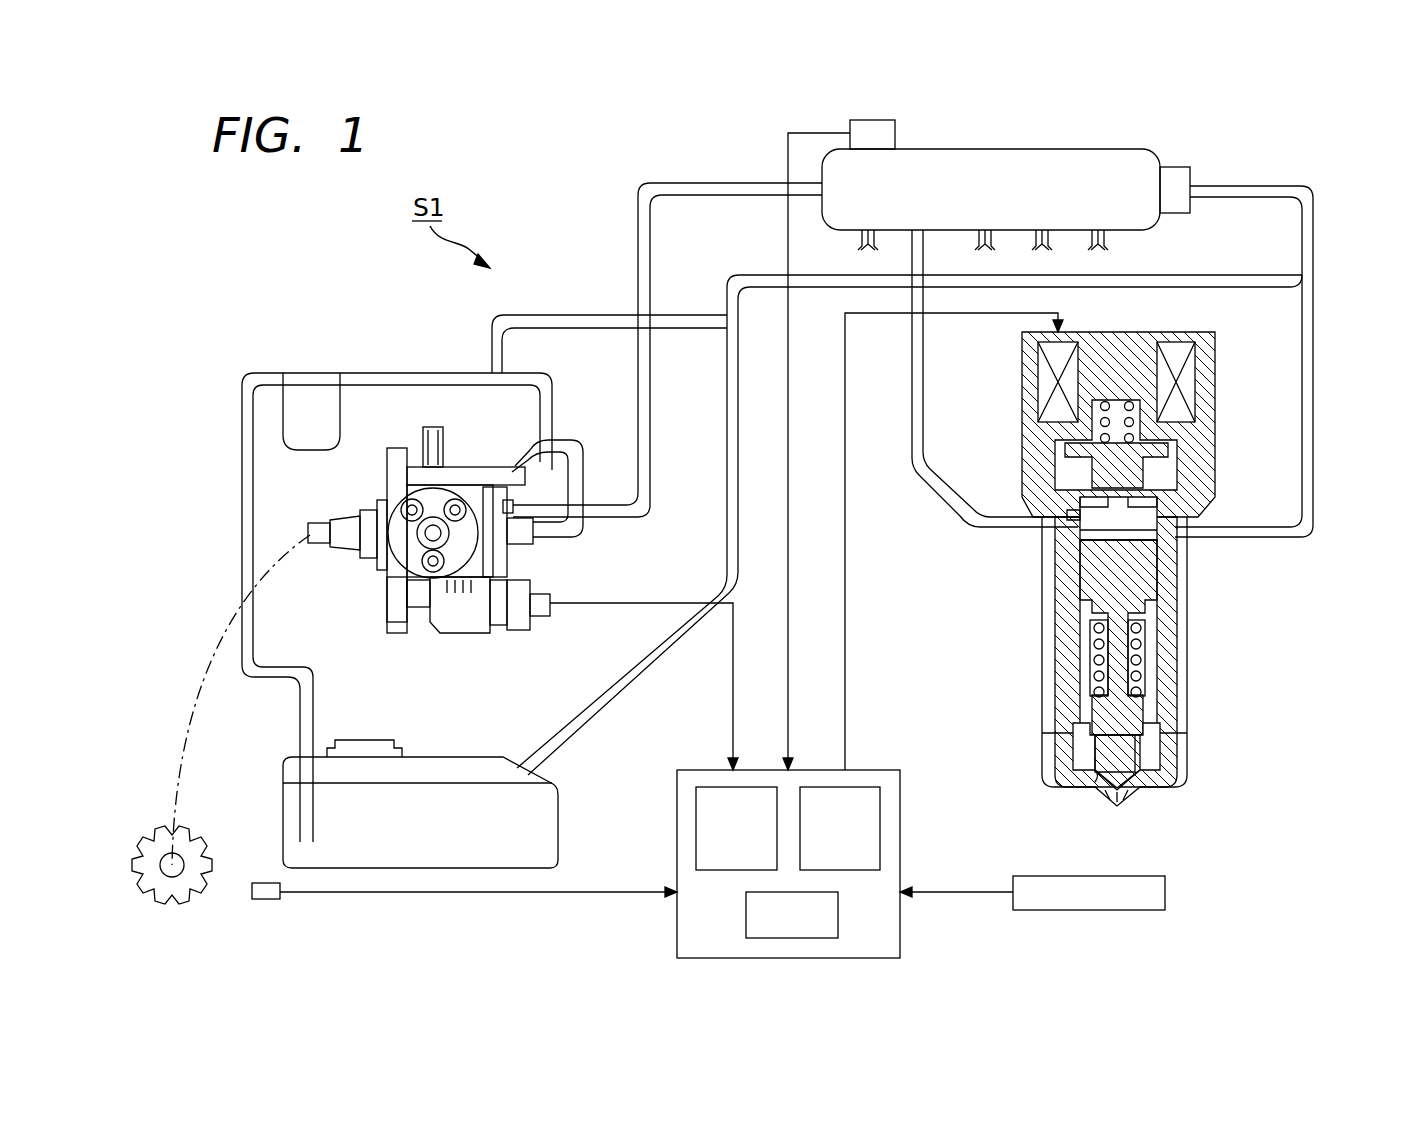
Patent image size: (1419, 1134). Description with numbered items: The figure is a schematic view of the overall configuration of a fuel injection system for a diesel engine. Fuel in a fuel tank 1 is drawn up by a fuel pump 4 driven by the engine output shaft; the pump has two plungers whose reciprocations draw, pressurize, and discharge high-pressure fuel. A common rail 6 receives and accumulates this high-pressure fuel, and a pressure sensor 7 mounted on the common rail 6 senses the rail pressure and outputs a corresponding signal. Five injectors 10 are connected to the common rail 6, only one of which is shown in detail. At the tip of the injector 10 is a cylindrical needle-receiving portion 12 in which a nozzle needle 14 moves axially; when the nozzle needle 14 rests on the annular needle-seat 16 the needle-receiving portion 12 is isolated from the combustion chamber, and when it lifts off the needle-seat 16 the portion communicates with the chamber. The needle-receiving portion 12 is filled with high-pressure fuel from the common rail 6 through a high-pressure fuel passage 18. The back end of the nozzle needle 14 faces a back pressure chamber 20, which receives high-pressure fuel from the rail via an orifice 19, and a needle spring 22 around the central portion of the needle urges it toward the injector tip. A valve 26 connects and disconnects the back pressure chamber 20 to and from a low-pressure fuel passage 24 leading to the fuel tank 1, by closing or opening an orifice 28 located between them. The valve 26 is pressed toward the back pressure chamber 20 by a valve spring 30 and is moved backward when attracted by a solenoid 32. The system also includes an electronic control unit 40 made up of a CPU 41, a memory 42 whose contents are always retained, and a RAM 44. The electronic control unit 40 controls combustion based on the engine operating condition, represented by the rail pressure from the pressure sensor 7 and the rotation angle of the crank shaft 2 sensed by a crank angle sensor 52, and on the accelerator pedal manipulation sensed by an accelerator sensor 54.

The fuel tank 1 is at (560, 808).
The crank shaft 2 is at (172, 860).
The fuel pump 4 is at (387, 466).
The common rail 6 is at (1012, 145).
The pressure sensor 7 is at (885, 121).
The injector 10 is at (1318, 722).
The needle-receiving portion 12 is at (1160, 752).
The nozzle needle 14 is at (1140, 790).
The needle-seat 16 is at (1095, 765).
The high-pressure fuel passage 18 is at (990, 535).
The orifice 19 is at (1070, 512).
The back pressure chamber 20 is at (1150, 530).
The needle spring 22 is at (1092, 640).
The low-pressure fuel passage 24 is at (1314, 500).
The valve 26 is at (1130, 470).
The orifice 28 is at (1120, 522).
The valve spring 30 is at (1140, 432).
The solenoid 32 is at (1198, 358).
The Electronic Control Unit (ECU) 40 is at (821, 843).
The CPU 41 is at (746, 914).
The memory 42 is at (715, 786).
The RAM 44 is at (870, 786).
The crank angle sensor 52 is at (264, 902).
The accelerator sensor 54 is at (1165, 888).